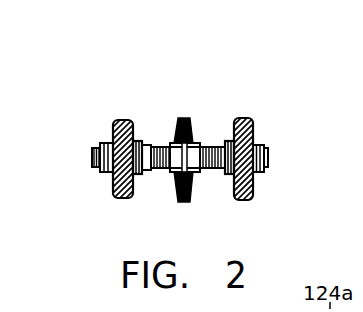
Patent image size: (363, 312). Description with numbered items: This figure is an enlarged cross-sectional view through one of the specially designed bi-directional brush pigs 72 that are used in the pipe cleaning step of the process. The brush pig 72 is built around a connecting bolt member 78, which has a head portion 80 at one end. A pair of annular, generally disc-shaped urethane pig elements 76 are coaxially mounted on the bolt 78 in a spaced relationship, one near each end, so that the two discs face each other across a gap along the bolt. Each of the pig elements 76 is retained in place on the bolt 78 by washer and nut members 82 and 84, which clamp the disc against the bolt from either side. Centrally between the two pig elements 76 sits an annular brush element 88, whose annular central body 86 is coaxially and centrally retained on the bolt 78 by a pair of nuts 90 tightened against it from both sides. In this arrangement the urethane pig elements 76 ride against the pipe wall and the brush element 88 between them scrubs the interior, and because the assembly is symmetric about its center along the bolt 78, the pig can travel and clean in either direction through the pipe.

The bi-directional brush pig 72 is at (247, 97).
The urethane pig element 76 is at (121, 120).
The connecting bolt member 78 is at (213, 174).
The head portion 80 is at (264, 163).
The washer member 82 is at (113, 142).
The nut member 84 is at (112, 172).
The annular central body 86 is at (193, 138).
The annular brush element 88 is at (182, 196).
The nut 90 is at (175, 143).